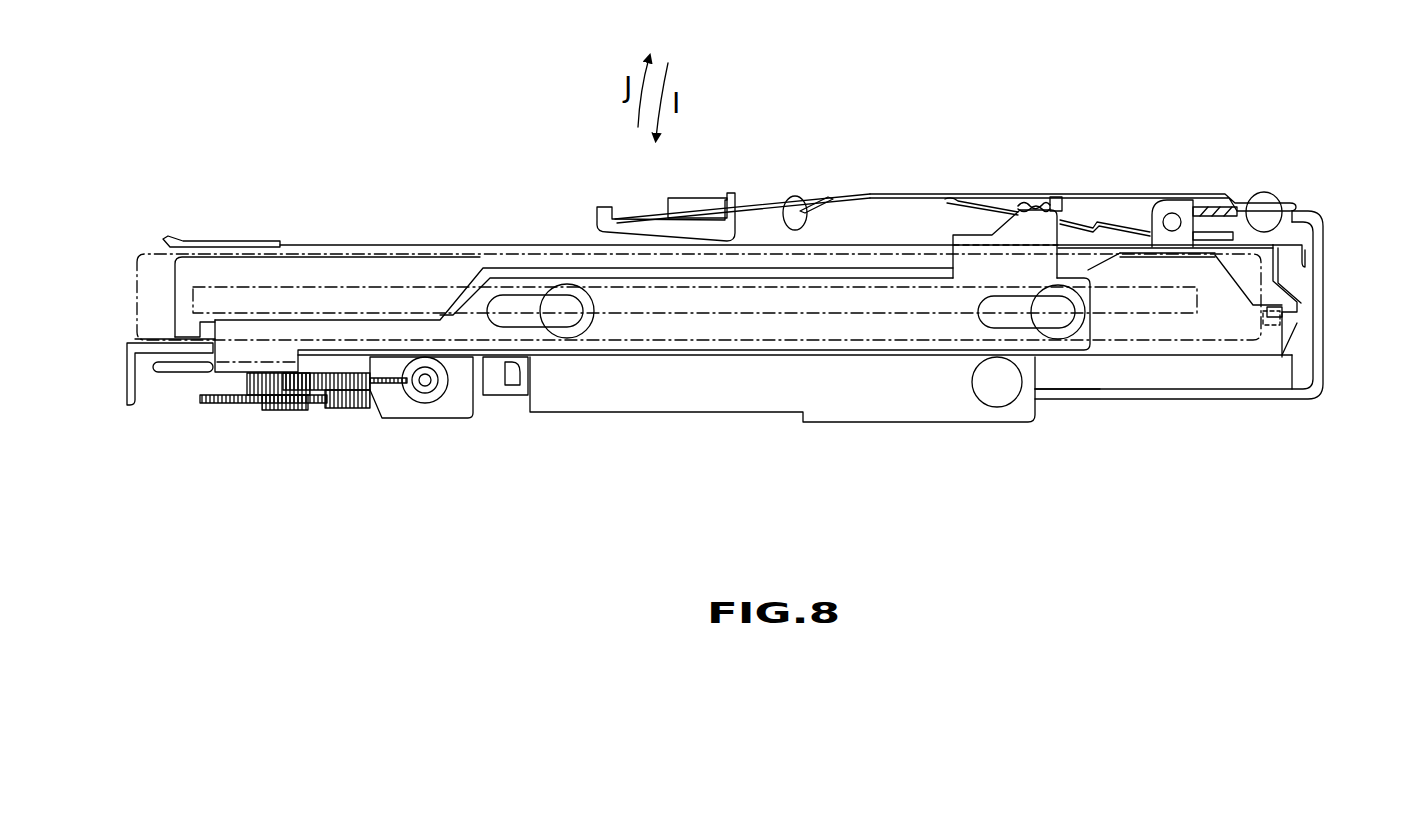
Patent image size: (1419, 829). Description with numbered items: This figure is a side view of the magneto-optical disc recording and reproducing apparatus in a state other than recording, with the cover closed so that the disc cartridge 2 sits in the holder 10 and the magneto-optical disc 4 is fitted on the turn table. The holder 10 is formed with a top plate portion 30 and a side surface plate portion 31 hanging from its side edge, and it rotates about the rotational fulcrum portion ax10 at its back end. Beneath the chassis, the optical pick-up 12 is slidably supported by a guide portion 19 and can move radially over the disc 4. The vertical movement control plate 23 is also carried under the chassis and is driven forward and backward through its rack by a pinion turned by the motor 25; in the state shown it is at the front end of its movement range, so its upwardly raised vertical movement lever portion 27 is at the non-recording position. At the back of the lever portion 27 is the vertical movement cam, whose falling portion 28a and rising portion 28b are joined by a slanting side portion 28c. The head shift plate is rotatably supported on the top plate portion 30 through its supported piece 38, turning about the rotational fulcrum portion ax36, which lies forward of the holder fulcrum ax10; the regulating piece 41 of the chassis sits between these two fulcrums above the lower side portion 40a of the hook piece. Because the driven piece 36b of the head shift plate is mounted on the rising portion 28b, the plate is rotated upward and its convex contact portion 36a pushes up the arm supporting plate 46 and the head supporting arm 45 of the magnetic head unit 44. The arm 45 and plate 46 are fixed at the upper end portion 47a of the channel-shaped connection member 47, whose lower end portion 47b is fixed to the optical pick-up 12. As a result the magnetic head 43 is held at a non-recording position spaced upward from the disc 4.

The disc cartridge 2 is at (458, 253).
The magneto-optical disc 4 is at (392, 287).
The holder 10 is at (345, 240).
The optical pick-up 12 is at (955, 412).
The guide portion 19 is at (508, 395).
The vertical movement control plate 23 is at (188, 368).
The motor 25 is at (447, 410).
The vertical movement lever portion 27 is at (718, 356).
The falling portion 28a is at (973, 233).
The rising portion 28b is at (1023, 200).
The slanting side portion 28c is at (987, 230).
The top plate portion 30 is at (212, 240).
The side surface plate portion 31 is at (290, 265).
The contact portion 36a is at (937, 197).
The driven piece 36b is at (1040, 200).
The supported piece 38 is at (1088, 202).
The lower side portion 40a is at (1303, 210).
The regulating piece 41 is at (1177, 213).
The magnetic head 43 is at (668, 205).
The magnetic head unit 44 is at (870, 194).
The head supporting arm 45 is at (762, 197).
The arm supporting plate 46 is at (787, 193).
The connection member 47 is at (1321, 303).
The upper end portion 47a is at (1243, 217).
The lower end portion 47b is at (1217, 400).
The rotational fulcrum portion of the holder ax10 is at (1316, 302).
The rotational fulcrum portion of the head shift plate ax36 is at (1167, 220).